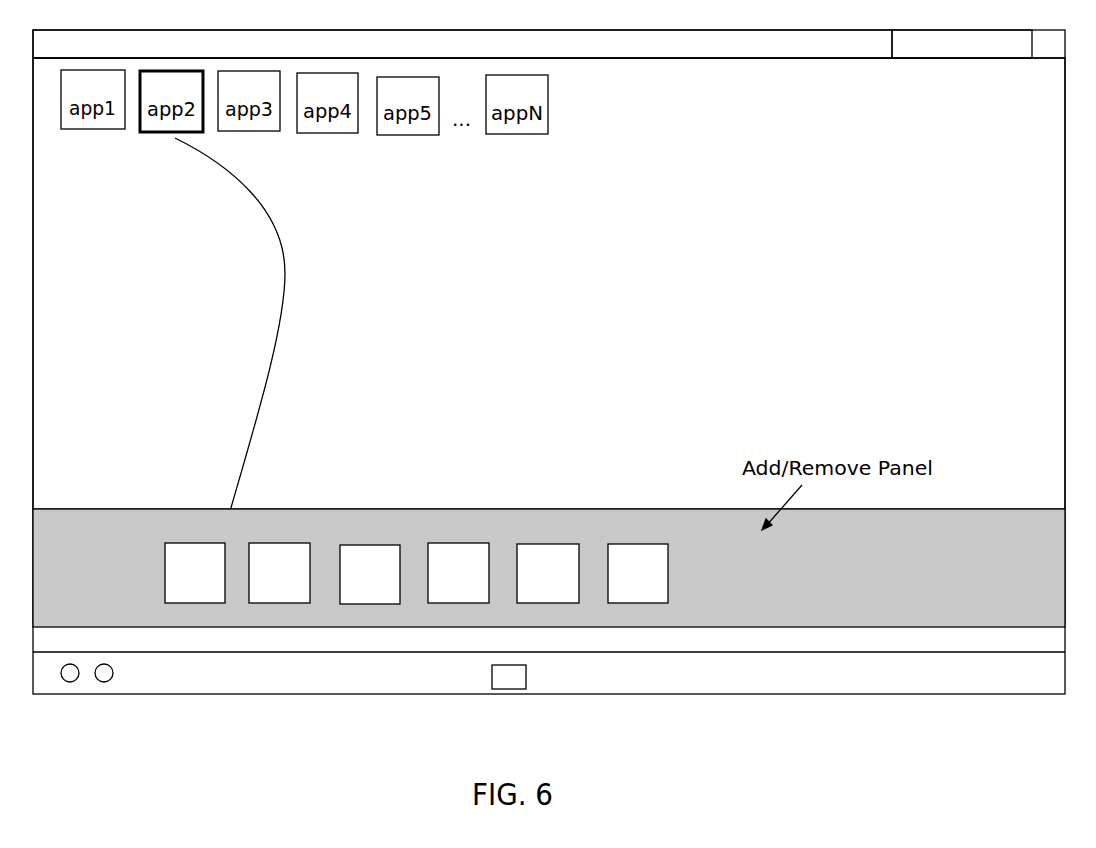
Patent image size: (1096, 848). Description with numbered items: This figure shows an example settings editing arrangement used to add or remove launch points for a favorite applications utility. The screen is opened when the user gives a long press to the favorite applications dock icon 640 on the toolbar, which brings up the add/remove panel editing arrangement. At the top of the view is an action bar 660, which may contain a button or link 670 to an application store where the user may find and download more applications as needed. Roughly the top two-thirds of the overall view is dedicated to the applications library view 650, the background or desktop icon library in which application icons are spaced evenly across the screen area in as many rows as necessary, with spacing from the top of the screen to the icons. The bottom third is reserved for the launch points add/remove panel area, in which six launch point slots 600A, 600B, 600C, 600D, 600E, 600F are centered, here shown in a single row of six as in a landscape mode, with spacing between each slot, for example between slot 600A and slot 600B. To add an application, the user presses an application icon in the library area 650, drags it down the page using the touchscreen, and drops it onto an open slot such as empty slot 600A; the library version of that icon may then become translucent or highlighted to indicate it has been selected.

The action bar 660 is at (462, 45).
The button or link to an application store 670 is at (962, 45).
The applications library view 650 is at (549, 283).
The favorite applications dock icon 640 is at (490, 700).
The launch point slot 600A is at (195, 560).
The launch point slot 600B is at (279, 561).
The launch point slot 600C is at (370, 561).
The launch point slot 600D is at (458, 559).
The launch point slot 600E is at (548, 561).
The launch point slot 600F is at (638, 560).